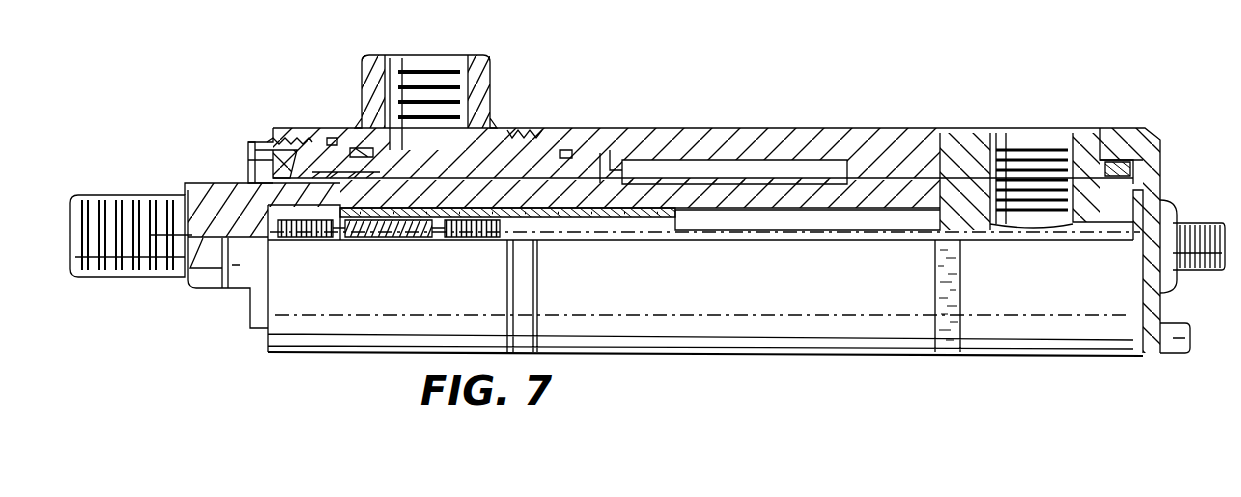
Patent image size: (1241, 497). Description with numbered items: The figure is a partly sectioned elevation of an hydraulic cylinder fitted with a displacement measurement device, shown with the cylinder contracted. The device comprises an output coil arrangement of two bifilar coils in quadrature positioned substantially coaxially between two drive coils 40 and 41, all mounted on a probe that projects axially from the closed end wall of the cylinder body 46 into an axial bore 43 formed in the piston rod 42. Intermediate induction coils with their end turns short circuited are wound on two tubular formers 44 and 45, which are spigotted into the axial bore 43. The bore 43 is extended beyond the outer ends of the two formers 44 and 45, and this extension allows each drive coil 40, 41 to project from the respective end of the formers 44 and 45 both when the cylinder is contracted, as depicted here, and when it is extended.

The drive coil 40 is at (316, 235).
The drive coil 41 is at (488, 237).
The piston rod 42 is at (207, 197).
The axial bore 43 is at (306, 205).
The tubular former 44 is at (408, 233).
The tubular former 45 is at (552, 210).
The cylinder body 46 is at (830, 302).